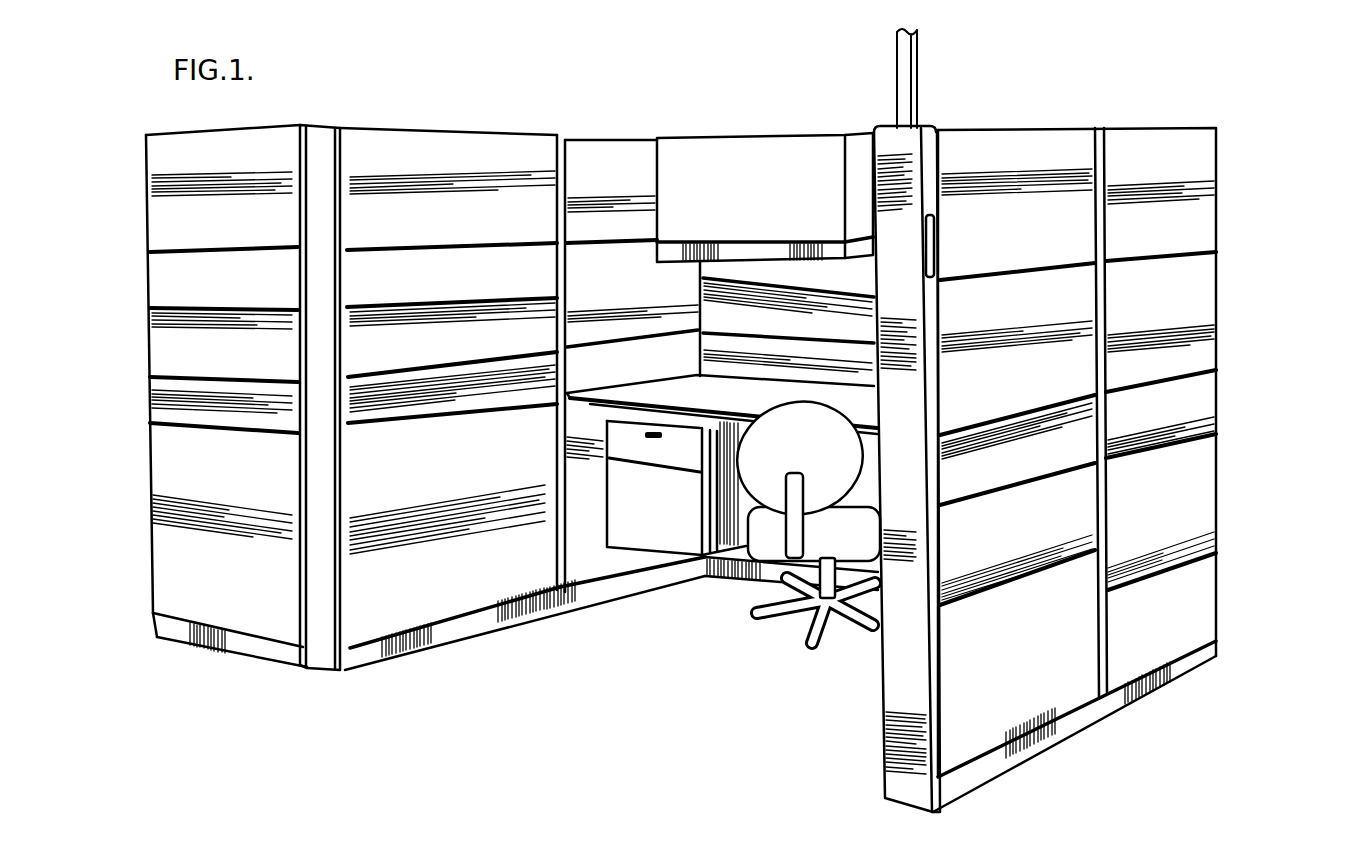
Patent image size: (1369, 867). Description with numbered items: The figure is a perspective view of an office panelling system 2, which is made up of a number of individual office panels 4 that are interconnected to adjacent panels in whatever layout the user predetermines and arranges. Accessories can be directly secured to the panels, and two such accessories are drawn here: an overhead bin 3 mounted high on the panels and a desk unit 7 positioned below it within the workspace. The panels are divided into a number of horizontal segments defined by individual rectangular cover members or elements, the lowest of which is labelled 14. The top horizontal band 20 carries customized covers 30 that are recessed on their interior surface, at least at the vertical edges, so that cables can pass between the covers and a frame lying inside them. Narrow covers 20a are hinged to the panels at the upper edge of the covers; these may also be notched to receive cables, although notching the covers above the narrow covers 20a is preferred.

The office panelling system 2 is at (1252, 284).
The overhead bin 3 is at (722, 152).
The office panel 4 is at (606, 148).
The desk unit 7 is at (662, 536).
The lower panel tile 14 is at (462, 600).
The top horizontal band 20 is at (466, 150).
The narrow cover 20a is at (494, 412).
The customized cover 30 is at (1027, 152).